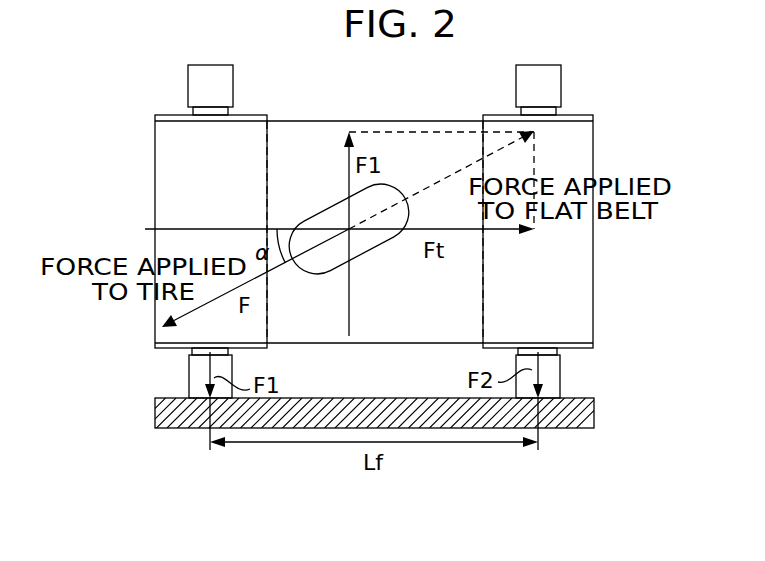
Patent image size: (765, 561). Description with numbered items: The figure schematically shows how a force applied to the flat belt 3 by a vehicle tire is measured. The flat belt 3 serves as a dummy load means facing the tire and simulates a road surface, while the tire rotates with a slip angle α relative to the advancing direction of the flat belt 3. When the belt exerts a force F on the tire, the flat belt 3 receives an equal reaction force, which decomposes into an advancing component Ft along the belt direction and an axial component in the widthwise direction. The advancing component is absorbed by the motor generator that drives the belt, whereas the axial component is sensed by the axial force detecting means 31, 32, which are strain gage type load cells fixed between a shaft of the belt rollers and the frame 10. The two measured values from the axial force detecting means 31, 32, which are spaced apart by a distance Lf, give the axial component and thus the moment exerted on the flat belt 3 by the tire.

The flat belt 3 is at (375, 121).
The axial force detecting means 31 is at (229, 362).
The axial force detecting means 32 is at (560, 372).
The frame 10 is at (594, 408).